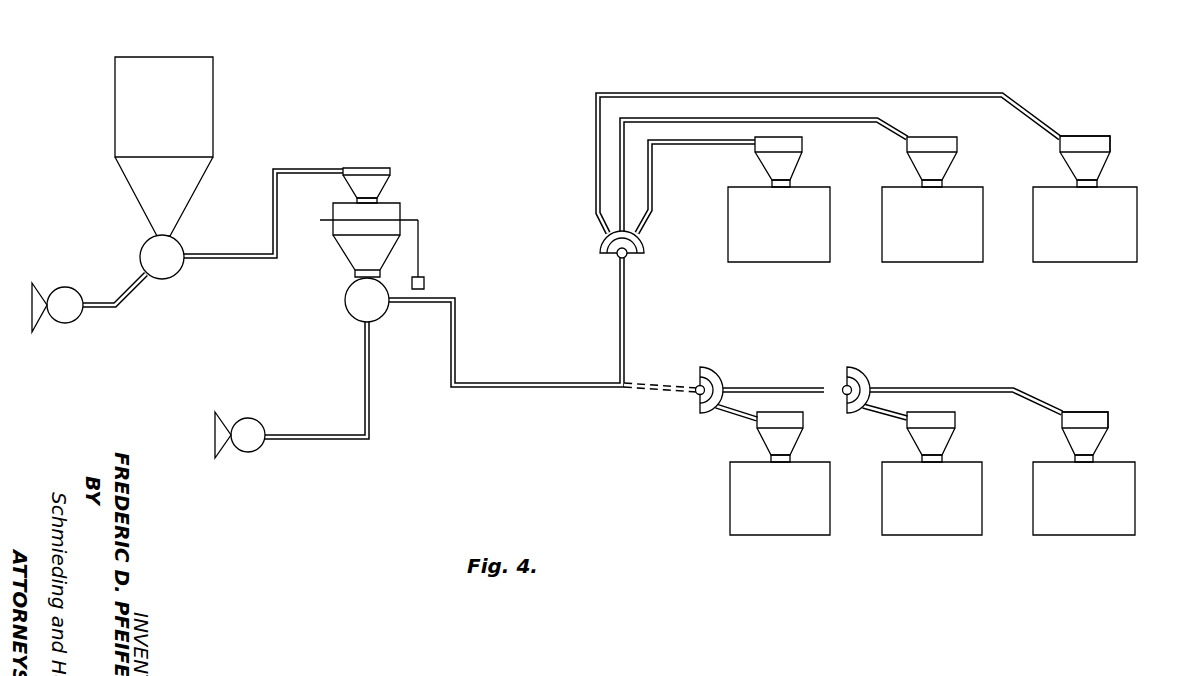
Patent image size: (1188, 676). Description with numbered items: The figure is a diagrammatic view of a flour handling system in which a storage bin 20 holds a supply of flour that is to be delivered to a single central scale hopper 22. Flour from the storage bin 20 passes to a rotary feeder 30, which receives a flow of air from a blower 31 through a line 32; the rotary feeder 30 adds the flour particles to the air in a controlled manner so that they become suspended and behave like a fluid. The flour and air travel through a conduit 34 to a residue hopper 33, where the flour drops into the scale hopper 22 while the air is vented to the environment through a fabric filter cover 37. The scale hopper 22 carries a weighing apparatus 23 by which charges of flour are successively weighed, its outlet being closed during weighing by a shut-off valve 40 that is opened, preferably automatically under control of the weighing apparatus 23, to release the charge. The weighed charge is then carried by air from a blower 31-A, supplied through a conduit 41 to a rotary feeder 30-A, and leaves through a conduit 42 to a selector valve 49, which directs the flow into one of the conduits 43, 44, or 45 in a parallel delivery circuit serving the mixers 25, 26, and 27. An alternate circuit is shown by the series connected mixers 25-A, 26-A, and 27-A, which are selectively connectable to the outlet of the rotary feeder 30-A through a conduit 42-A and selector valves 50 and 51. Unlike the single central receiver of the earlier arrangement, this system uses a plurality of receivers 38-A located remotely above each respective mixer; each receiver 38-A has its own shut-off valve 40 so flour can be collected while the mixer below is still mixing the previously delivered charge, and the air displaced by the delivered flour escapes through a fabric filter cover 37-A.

The storage bin 20 is at (209, 92).
The rotary feeder 30 is at (146, 253).
The blower 31 is at (68, 316).
The line 32 is at (135, 291).
The conduit 34 is at (273, 205).
The filter cover 37 is at (372, 167).
The residue hopper 33 is at (380, 186).
The scale hopper 22 is at (401, 209).
The weighing apparatus 23 is at (418, 263).
The shut-off valve 40 is at (356, 276).
The rotary feeder 30-A is at (357, 309).
The blower 31-A is at (282, 398).
The conduit 41 is at (365, 410).
The conduit 42 is at (533, 390).
The conduit 42-A is at (641, 394).
The conduit 43 is at (736, 92).
The conduit 44 is at (839, 123).
The conduit 45 is at (678, 148).
The selector valve 49 is at (599, 253).
The selector valve 50 is at (750, 353).
The selector valve 51 is at (895, 353).
The mixer 25 is at (758, 254).
The mixer 26 is at (910, 254).
The mixer 27 is at (1060, 254).
The mixer 25-A is at (757, 528).
The mixer 26-A is at (907, 528).
The mixer 27-A is at (1062, 528).
The receiver 38-A is at (796, 163).
The filter cover 37-A is at (1078, 135).